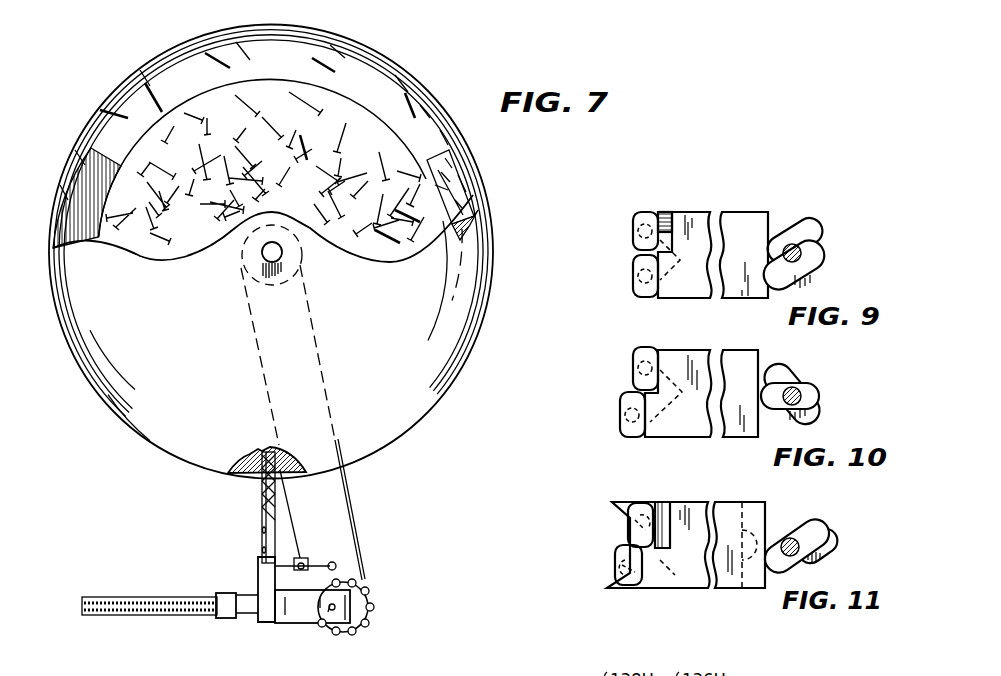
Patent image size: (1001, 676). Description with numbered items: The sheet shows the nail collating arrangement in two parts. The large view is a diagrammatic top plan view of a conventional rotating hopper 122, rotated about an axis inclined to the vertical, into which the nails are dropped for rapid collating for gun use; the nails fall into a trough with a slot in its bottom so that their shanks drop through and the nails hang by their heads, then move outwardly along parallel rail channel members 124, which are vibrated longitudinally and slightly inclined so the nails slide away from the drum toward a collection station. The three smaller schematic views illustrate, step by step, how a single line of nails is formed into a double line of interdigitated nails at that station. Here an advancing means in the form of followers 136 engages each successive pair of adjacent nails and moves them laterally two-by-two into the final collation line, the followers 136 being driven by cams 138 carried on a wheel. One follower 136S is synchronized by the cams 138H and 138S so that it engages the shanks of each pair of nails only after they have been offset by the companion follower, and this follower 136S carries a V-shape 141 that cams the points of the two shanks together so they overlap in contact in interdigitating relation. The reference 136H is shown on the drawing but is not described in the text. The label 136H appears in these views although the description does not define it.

In FIG. 7, the rotating hopper 122 is at (470, 276).
In FIG. 7, the parallel rail channel members 124 is at (262, 490).
In FIG. 9, the followers 136 is at (689, 237).
In FIG. 10, the followers 136 is at (701, 390).
In FIG. 11, the followers 136 is at (686, 546).
In FIG. 9, the follower 136S is at (670, 215).
In FIG. 11, the follower 136S is at (652, 580).
In FIG. 9, the hole of pickup block 136H is at (672, 288).
In FIG. 10, the hole of pickup block 136H is at (680, 425).
In FIG. 11, the hole of pickup block 136H is at (683, 582).
In FIG. 9, the cams 138 is at (819, 232).
In FIG. 10, the cams 138 is at (821, 385).
In FIG. 11, the cams 138 is at (820, 536).
In FIG. 9, the cam 138S is at (785, 220).
In FIG. 10, the cam 138S is at (772, 380).
In FIG. 11, the cam 138S is at (830, 551).
In FIG. 9, the cam 138H is at (787, 238).
In FIG. 10, the cam 138H is at (800, 382).
In FIG. 11, the cam 138H is at (805, 528).
In FIG. 9, the V-shape 141 is at (640, 258).
In FIG. 10, the V-shape 141 is at (620, 410).
In FIG. 11, the V-shape 141 is at (627, 512).